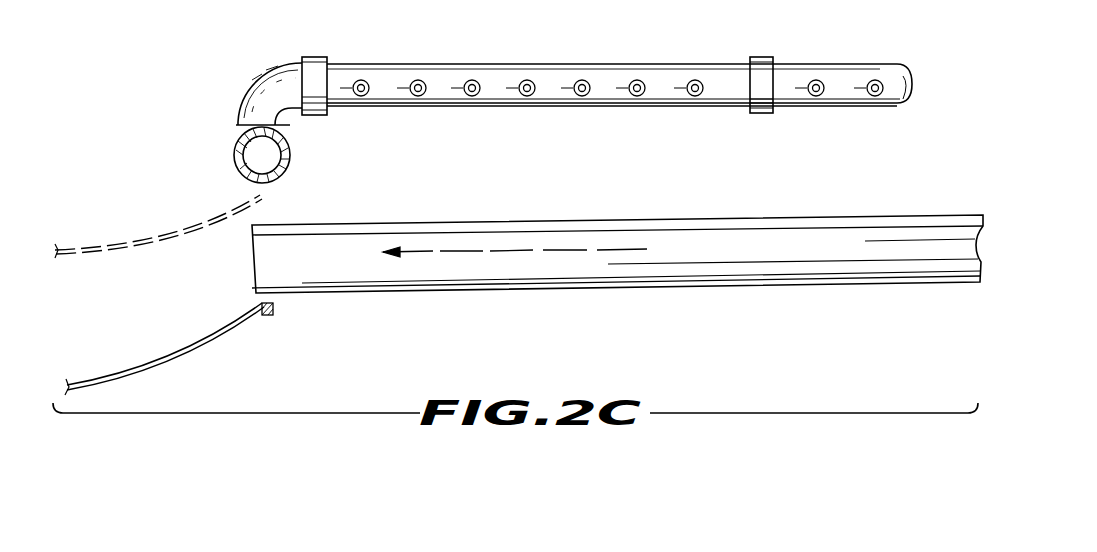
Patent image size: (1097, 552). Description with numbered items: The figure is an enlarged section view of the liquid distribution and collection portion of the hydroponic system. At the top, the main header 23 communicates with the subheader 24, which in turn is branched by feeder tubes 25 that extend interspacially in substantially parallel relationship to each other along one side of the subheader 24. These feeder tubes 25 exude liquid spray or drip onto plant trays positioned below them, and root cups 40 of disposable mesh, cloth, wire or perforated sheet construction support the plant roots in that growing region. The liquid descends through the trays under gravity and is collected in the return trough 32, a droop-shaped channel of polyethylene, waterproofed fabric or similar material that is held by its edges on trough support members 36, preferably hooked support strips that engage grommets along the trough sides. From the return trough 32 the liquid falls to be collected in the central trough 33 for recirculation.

The main header 23 is at (290, 160).
The subheader 24 is at (340, 64).
The feeder tubes 25 is at (412, 80).
The return trough 32 is at (562, 272).
The central trough 33 is at (168, 356).
The trough support members 36 is at (687, 221).
The root cups 40 is at (120, 248).